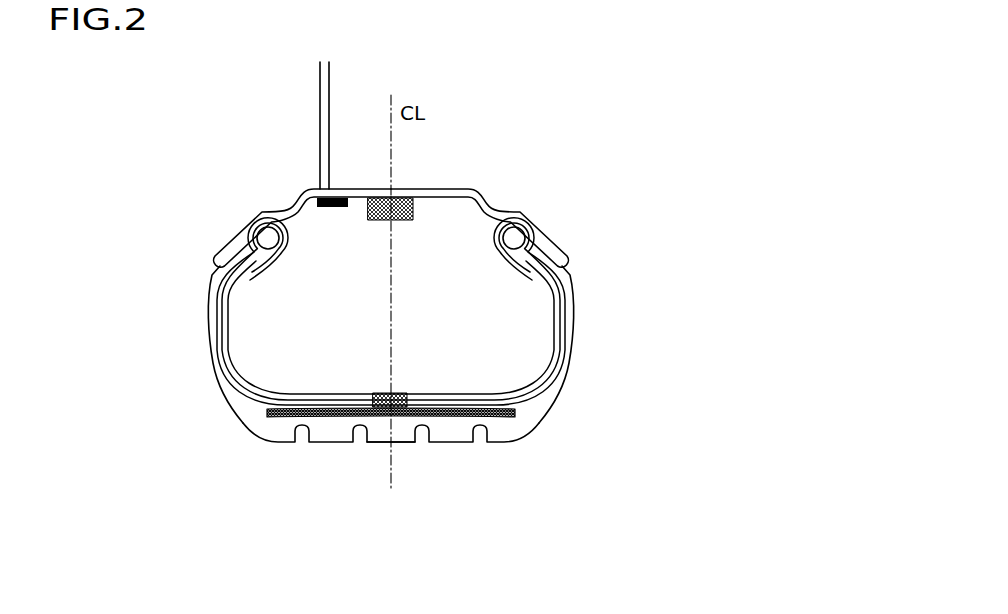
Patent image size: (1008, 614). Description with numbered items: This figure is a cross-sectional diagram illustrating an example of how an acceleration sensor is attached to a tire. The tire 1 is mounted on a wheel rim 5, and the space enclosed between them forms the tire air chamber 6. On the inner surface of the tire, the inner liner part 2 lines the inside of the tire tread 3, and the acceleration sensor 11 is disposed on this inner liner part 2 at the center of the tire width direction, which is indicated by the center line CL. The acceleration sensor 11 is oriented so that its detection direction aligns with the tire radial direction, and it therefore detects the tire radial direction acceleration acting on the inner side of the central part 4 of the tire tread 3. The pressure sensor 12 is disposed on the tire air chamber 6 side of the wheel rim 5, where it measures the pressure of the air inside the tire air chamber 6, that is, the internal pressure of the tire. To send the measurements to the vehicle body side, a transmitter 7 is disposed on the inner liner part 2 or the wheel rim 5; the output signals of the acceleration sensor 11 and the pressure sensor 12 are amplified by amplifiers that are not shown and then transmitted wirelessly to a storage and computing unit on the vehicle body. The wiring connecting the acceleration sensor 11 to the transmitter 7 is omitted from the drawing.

The tire 1 is at (582, 286).
The inner liner part 2 is at (333, 403).
The tire tread 3 is at (333, 435).
The central part 4 is at (400, 428).
The wheel rim 5 is at (292, 207).
The tire air chamber 6 is at (257, 308).
The transmitter 7 is at (335, 203).
The acceleration sensor 11 is at (403, 395).
The pressure sensor 12 is at (400, 204).